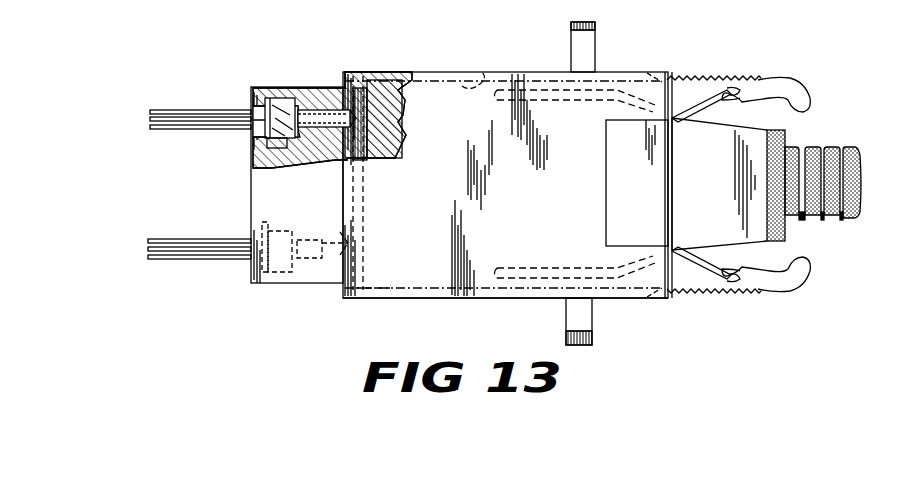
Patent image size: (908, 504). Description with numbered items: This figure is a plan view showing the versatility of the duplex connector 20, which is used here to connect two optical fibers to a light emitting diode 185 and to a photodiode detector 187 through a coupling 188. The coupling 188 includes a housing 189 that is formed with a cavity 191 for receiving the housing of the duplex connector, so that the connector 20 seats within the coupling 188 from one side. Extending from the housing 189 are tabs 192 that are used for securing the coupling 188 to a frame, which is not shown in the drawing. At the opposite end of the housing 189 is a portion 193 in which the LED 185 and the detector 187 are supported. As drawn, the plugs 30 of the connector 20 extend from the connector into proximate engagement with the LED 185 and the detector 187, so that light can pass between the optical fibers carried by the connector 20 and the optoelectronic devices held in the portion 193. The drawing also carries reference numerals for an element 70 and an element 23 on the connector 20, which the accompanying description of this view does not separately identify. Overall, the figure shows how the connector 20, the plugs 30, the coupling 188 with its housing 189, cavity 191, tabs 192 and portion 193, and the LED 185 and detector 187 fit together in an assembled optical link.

The connector 20 is at (758, 80).
The strain relief boot 23 is at (845, 154).
The plugs 30 is at (322, 241).
The terminus pin 70 is at (322, 115).
The light emitting diode 185 is at (275, 102).
The photodiode detector 187 is at (287, 270).
The coupling 188 is at (461, 70).
The housing 189 is at (407, 299).
The cavity 191 is at (480, 78).
The tabs 192 is at (592, 58).
The portion of the housing 193 is at (252, 182).